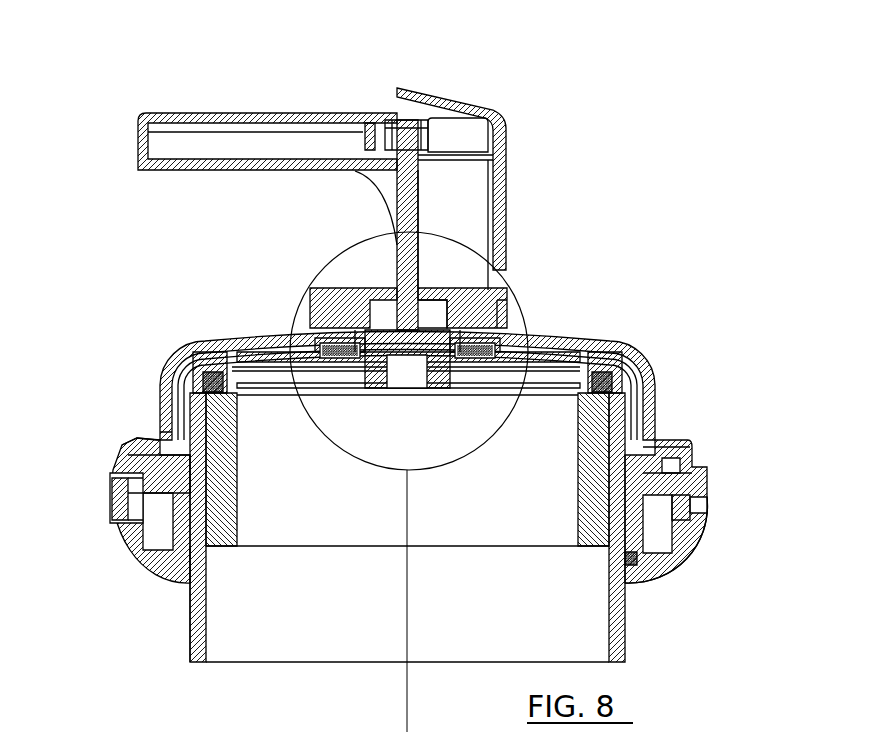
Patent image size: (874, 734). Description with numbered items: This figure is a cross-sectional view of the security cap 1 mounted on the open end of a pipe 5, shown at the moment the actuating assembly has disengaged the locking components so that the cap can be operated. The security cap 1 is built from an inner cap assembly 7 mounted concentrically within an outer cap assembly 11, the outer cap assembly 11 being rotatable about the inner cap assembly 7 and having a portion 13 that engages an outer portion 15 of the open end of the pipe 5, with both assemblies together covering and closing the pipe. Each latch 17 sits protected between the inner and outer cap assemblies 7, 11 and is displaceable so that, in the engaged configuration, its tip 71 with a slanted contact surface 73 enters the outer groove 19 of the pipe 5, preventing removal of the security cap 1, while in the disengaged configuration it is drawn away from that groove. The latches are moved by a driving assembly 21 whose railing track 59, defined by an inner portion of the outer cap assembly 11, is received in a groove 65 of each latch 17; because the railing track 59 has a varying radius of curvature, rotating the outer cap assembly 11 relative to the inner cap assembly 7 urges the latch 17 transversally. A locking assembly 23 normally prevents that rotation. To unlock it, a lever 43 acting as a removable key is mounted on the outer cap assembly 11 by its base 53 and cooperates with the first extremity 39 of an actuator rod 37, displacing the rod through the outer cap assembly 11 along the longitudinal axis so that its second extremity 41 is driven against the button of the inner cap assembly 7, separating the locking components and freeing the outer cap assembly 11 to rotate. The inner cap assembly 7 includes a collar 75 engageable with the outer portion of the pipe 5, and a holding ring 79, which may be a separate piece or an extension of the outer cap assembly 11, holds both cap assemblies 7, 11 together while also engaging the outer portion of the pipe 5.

The security cap 1 is at (675, 337).
The pipe 5 is at (627, 627).
The inner cap assembly 7 is at (222, 357).
The outer cap assembly 11 is at (170, 352).
The portion 13 is at (110, 550).
The outer portion 15 is at (177, 607).
The latch 17 is at (197, 477).
The outer groove 19 is at (700, 483).
The driving assembly 21 is at (167, 443).
The locking assembly 23 is at (475, 367).
The actuator rod 37 is at (420, 205).
The first extremity 39 is at (410, 120).
The second extremity 41 is at (423, 322).
The lever 43 is at (237, 92).
The base 53 is at (343, 286).
The railing track 59 is at (653, 453).
The groove 65 is at (133, 475).
The tip 71 is at (203, 455).
The slanted contact surface 73 is at (203, 455).
The collar 75 is at (650, 528).
The holding ring 79 is at (697, 550).